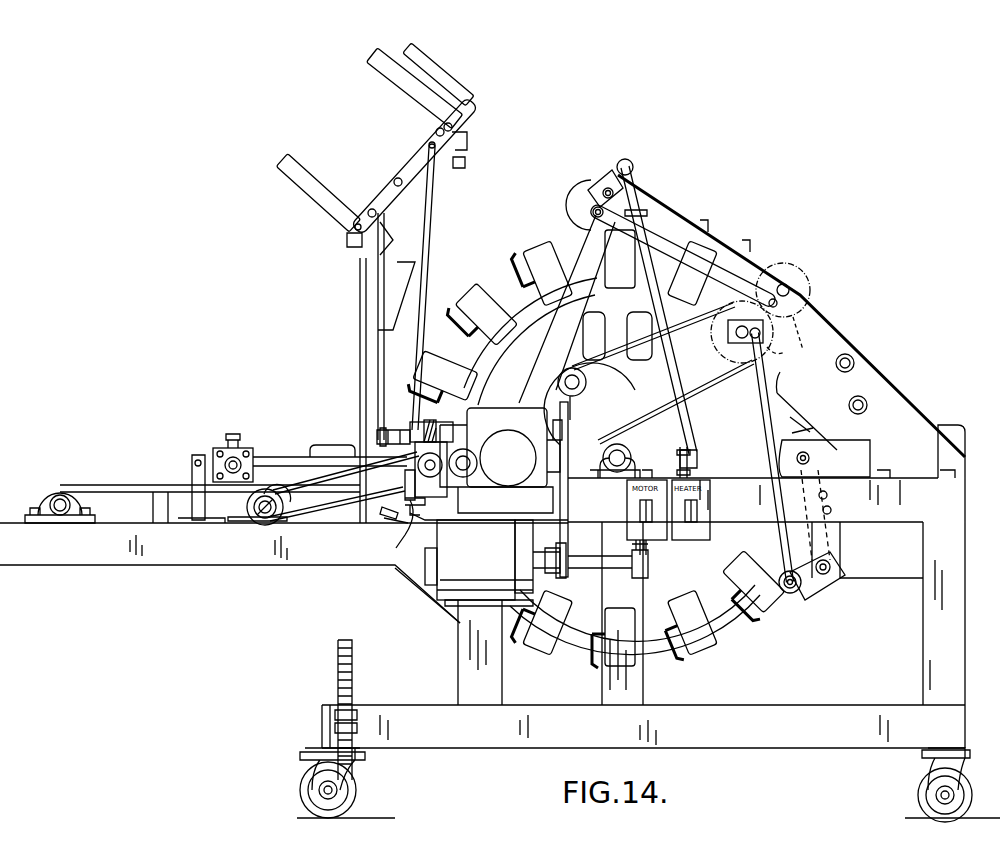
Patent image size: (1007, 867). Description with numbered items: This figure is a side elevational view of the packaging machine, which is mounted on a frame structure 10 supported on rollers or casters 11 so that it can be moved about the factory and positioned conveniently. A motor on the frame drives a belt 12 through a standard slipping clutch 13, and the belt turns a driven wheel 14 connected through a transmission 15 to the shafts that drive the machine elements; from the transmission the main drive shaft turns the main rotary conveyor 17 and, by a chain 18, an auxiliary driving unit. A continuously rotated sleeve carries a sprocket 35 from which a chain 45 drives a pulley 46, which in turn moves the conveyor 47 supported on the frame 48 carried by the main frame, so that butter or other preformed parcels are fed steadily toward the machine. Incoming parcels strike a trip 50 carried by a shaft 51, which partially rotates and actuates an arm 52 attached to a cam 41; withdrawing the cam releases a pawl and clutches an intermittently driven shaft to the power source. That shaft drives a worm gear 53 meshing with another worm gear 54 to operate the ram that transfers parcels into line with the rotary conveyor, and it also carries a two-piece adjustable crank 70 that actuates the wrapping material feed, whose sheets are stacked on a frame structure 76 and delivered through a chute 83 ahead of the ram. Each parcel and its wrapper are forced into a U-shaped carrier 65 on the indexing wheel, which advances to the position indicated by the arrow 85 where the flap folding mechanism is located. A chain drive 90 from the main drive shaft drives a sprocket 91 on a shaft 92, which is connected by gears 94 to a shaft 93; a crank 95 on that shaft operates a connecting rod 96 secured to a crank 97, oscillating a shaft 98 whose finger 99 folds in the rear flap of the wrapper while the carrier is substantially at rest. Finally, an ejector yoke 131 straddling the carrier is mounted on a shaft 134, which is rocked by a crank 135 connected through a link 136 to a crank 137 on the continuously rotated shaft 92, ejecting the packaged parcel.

The frame structure 10 is at (923, 662).
The rollers or casters 11 is at (925, 802).
The belt 12 is at (562, 535).
The slipping clutch 13 is at (553, 612).
The driven wheel 14 is at (596, 400).
The transmission 15 is at (489, 464).
The main rotary conveyor 17 is at (712, 580).
The chain 18 is at (716, 384).
The sprocket 35 is at (270, 517).
The cam 41 is at (405, 478).
The chain 45 is at (325, 508).
The pulley 46 is at (258, 518).
The conveyor 47 is at (85, 485).
The frame 48 is at (65, 548).
The trip 50 is at (323, 445).
The shaft 51 is at (357, 520).
The arm 52 is at (386, 521).
The worm gear 53 is at (410, 528).
The worm gear 54 is at (432, 425).
The U-shaped carrier 65 is at (556, 265).
The two-piece adjustable crank 70 is at (432, 234).
The frame structure 76 is at (470, 110).
The chute 83 is at (400, 285).
The arrow 85 is at (621, 136).
The chain drive 90 is at (640, 357).
The sprocket 91 is at (722, 342).
The shaft 92 is at (735, 325).
The shaft 93 is at (790, 276).
The gears 94 is at (773, 347).
The crank 95 is at (783, 262).
The connecting rod 96 is at (680, 235).
The crank 97 is at (590, 210).
The shaft 98 is at (612, 190).
The finger 99 is at (590, 185).
The yoke 131 is at (820, 457).
The shaft 134 is at (838, 578).
The crank 135 is at (806, 592).
The link 136 is at (771, 405).
The crank 137 is at (742, 320).